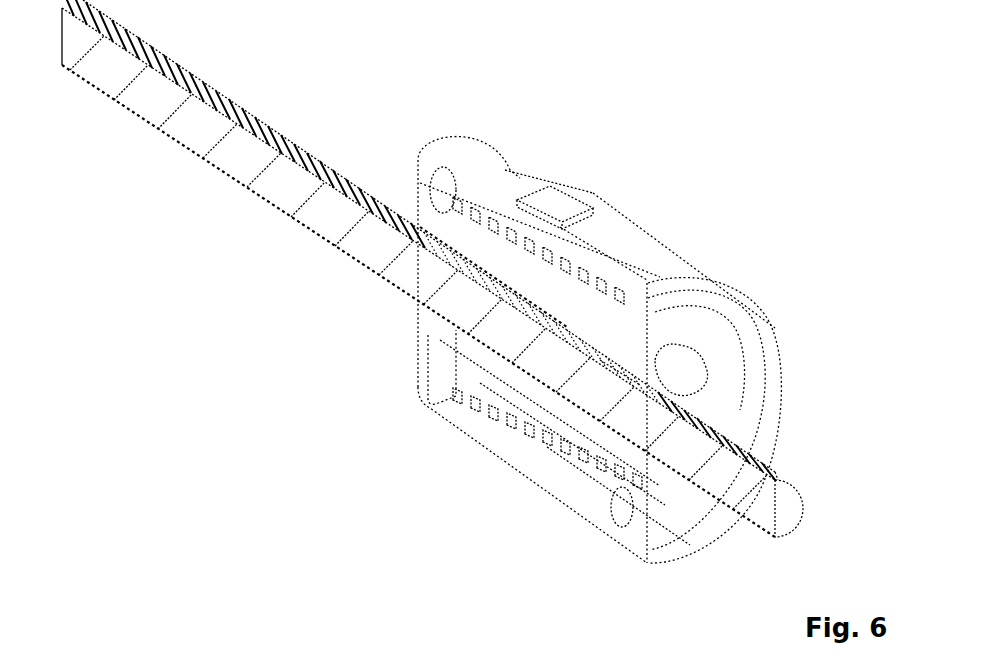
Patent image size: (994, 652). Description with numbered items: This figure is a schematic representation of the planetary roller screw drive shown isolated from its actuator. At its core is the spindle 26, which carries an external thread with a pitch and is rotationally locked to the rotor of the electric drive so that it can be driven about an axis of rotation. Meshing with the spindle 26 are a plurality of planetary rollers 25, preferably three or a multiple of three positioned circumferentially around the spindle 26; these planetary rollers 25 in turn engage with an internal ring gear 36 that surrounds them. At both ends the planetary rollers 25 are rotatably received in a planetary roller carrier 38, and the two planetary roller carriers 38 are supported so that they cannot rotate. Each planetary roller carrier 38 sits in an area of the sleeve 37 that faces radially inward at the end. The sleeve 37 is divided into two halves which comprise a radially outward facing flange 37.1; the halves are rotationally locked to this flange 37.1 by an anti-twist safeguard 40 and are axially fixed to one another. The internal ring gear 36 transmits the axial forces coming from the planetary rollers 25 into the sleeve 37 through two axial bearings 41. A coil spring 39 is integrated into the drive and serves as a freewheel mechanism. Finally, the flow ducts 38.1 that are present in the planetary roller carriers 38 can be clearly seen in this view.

The planetary rollers 25 is at (520, 408).
The spindle 26 is at (353, 243).
The internal ring gear 36 is at (477, 223).
The sleeve 37 is at (473, 162).
The flange 37.1 is at (550, 197).
The planetary roller carrier 38 is at (698, 377).
The flow ducts 38.1 is at (667, 380).
The coil spring 39 is at (575, 268).
The anti-twist safeguard 40 is at (595, 193).
The axial bearings 41 is at (443, 193).